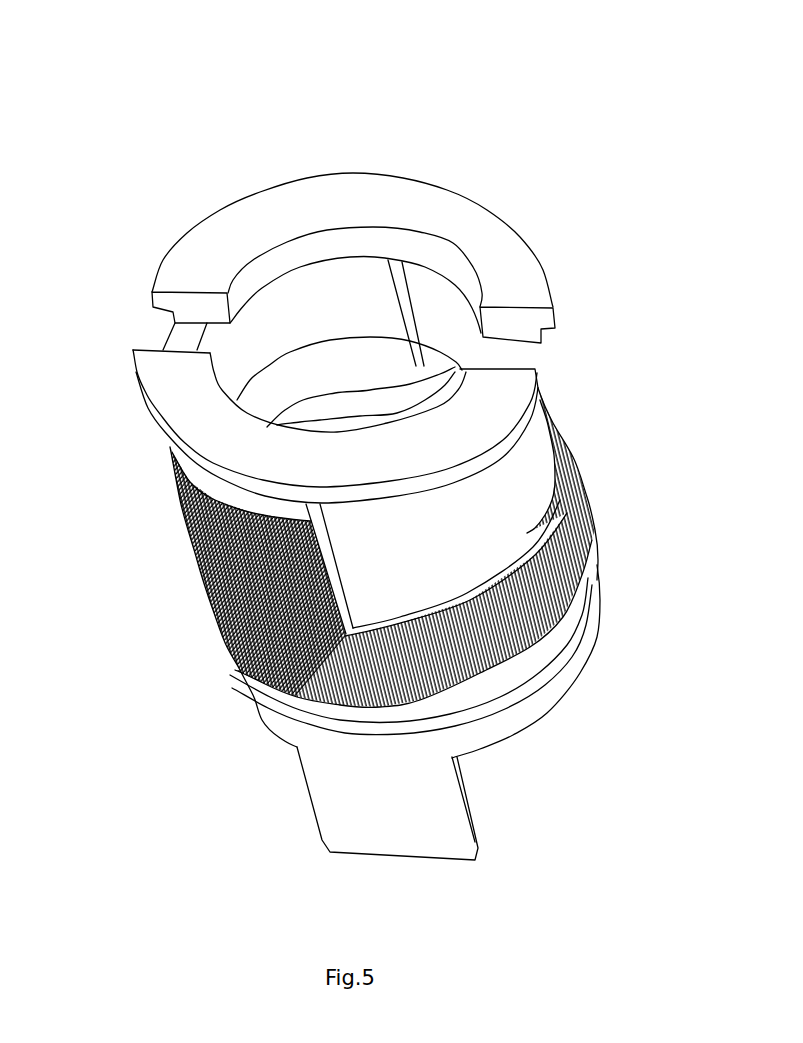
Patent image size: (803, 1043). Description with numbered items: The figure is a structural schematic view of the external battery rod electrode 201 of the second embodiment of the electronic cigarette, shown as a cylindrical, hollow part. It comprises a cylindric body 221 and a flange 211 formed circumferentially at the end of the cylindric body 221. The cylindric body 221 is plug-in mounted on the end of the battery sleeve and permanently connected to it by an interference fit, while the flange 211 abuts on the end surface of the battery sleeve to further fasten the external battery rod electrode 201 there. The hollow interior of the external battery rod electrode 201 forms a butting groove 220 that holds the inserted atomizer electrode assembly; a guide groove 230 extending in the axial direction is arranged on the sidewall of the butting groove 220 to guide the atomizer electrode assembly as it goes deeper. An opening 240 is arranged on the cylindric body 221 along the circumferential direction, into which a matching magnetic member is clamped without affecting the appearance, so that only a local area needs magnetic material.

The external battery rod electrode 201 is at (152, 44).
The flange 211 is at (490, 218).
The butting groove 220 is at (370, 318).
The cylindric body 221 is at (200, 577).
The guide groove 230 is at (140, 320).
The opening 240 is at (476, 578).